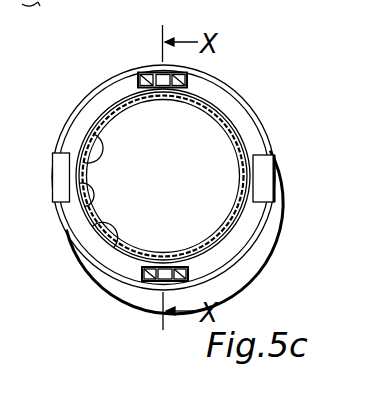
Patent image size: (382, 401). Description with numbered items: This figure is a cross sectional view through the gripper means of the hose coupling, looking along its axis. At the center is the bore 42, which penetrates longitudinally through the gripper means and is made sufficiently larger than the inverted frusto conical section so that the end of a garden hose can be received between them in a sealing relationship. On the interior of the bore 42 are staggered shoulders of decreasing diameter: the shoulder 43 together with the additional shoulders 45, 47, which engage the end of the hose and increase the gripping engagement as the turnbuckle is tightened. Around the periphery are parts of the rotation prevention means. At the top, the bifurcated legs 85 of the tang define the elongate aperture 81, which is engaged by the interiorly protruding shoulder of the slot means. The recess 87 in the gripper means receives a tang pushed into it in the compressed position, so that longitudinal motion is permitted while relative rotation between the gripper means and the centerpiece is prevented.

The bore 42 is at (163, 163).
The shoulder 43 is at (95, 134).
The additional shoulder 45 is at (88, 197).
The additional shoulder 47 is at (115, 241).
The elongate aperture 81 is at (170, 286).
The bifurcated legs 85 is at (147, 74).
The recess 87 is at (266, 181).